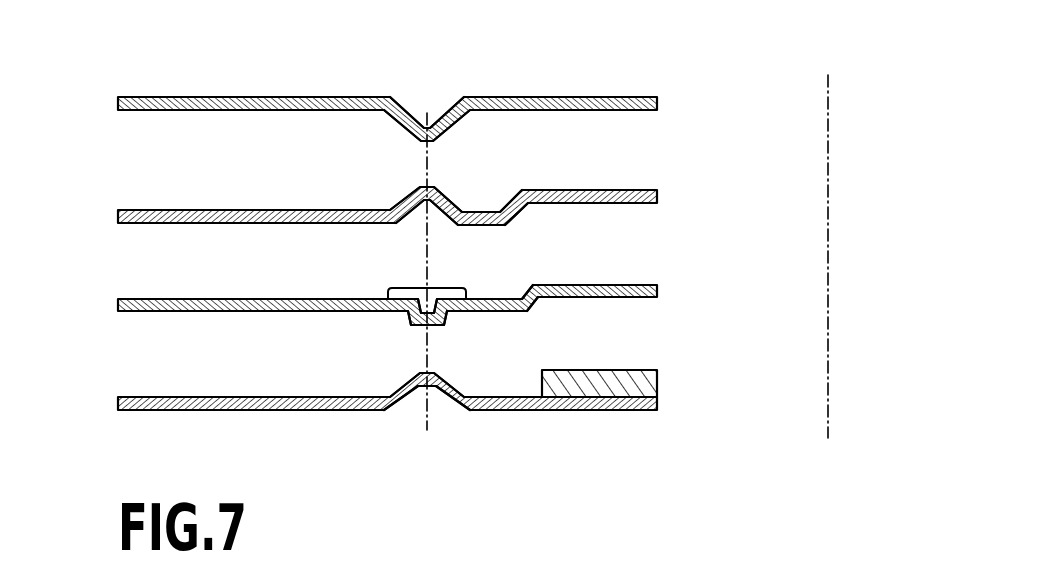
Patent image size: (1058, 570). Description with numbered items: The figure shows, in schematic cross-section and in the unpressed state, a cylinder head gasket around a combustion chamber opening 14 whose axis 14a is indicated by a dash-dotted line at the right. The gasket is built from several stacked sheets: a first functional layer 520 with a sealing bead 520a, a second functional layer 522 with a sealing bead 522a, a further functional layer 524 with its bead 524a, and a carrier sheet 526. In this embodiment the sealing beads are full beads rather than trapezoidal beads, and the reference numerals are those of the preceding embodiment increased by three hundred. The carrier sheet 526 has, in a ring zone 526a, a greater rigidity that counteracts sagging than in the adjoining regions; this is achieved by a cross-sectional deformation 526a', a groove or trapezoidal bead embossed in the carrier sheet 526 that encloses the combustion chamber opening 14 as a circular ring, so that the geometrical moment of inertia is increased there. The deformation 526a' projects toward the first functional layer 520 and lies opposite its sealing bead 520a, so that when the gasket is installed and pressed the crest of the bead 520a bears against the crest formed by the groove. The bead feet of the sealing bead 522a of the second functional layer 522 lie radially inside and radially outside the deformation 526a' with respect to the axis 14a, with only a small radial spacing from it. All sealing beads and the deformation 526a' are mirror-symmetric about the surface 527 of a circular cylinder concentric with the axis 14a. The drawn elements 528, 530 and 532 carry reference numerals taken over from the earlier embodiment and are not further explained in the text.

The combustion chamber opening 14 is at (710, 135).
The axis of the combustion chamber opening 14a is at (828, 267).
The first functional layer 520 is at (118, 410).
The sealing bead of the first functional layer 520a is at (374, 374).
The second functional layer 522 is at (118, 224).
The sealing bead of the second functional layer 522a is at (465, 194).
The third plate layer 524 is at (118, 112).
The bead of third plate layer 524a is at (392, 128).
The carrier sheet 526 is at (118, 312).
The ring zone 526a is at (367, 279).
The cross-sectional deformation 526a' is at (339, 325).
The surface of a circular cylinder 527 is at (427, 437).
The spacer block 528 is at (640, 391).
The step of second plate layer 530 is at (525, 213).
The step of fourth plate layer 532 is at (528, 302).